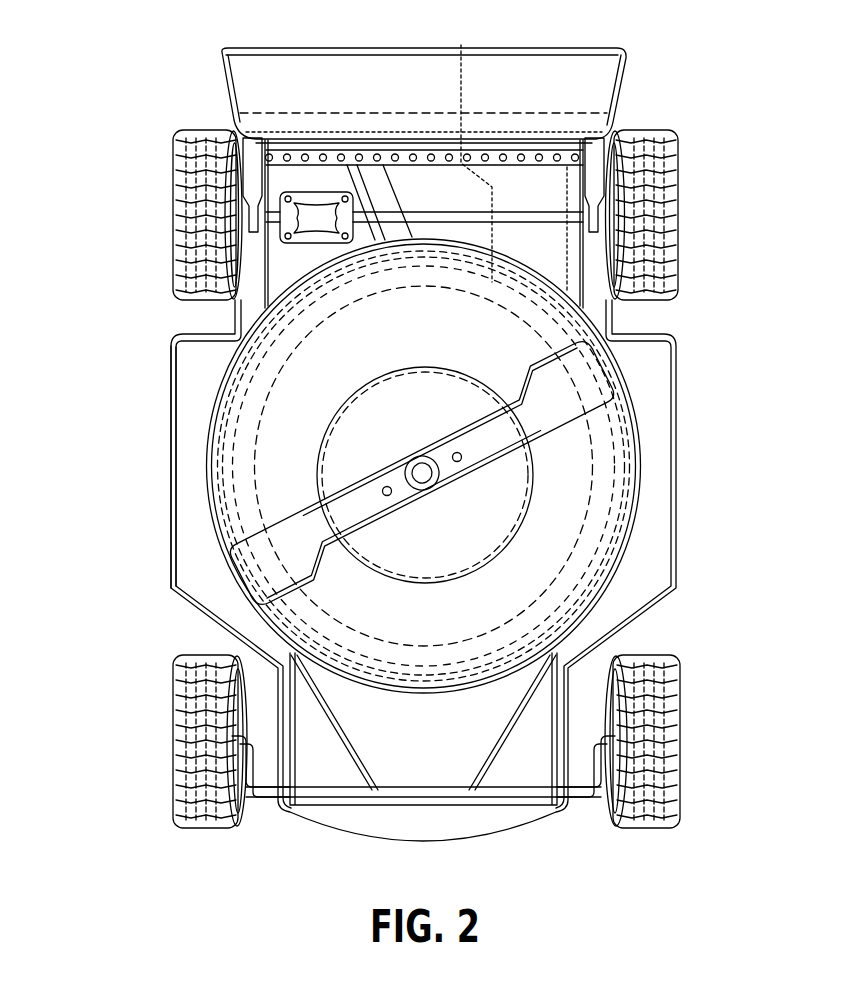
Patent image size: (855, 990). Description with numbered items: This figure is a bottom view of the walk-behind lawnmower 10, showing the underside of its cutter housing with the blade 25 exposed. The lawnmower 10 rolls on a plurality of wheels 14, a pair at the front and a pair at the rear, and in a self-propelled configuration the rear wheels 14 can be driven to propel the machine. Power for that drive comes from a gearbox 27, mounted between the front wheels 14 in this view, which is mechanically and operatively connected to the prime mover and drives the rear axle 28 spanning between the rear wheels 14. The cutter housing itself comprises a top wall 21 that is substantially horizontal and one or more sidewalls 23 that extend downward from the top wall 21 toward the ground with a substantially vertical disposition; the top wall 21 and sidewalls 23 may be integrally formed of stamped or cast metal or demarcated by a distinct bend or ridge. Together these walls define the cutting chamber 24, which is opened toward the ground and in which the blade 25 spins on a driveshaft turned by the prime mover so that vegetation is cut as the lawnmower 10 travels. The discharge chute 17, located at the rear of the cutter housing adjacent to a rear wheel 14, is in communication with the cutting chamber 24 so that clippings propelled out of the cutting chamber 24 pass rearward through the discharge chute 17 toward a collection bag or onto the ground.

The lawnmower 10 is at (118, 162).
The wheels 14 is at (192, 132).
The discharge chute 17 is at (461, 45).
The top wall 21 is at (555, 558).
The sidewalls 23 is at (677, 545).
The cutting chamber 24 is at (213, 526).
The blade 25 is at (575, 385).
The gearbox 27 is at (322, 212).
The rear axle 28 is at (548, 212).